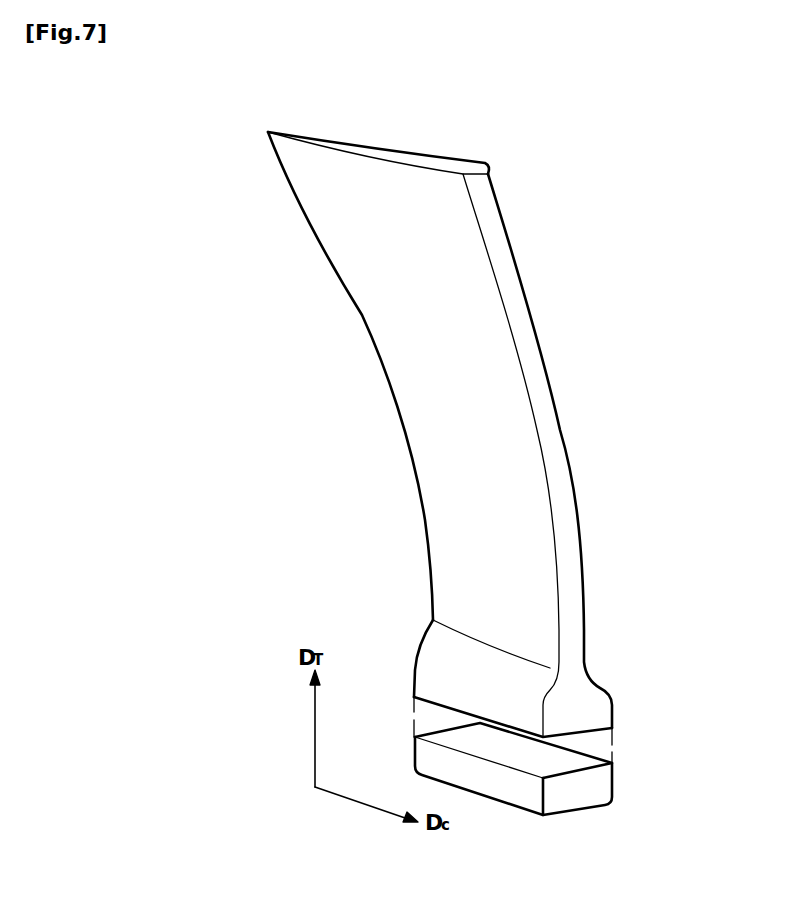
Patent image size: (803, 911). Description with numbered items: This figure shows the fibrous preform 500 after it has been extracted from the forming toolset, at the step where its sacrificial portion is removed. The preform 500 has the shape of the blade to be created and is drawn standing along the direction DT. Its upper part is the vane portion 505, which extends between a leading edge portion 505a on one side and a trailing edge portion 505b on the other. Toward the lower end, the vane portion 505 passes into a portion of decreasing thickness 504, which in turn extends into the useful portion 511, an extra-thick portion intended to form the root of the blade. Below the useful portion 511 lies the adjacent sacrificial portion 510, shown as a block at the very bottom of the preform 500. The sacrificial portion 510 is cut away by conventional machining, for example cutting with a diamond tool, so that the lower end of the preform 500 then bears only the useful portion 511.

The fibrous preform 500 is at (470, 473).
The vane portion 505 is at (444, 434).
The leading edge portion 505a is at (537, 383).
The trailing edge portion 505b is at (395, 398).
The portion of decreasing thickness 504 is at (572, 670).
The useful portion 511 is at (598, 713).
The sacrificial portion 510 is at (597, 791).